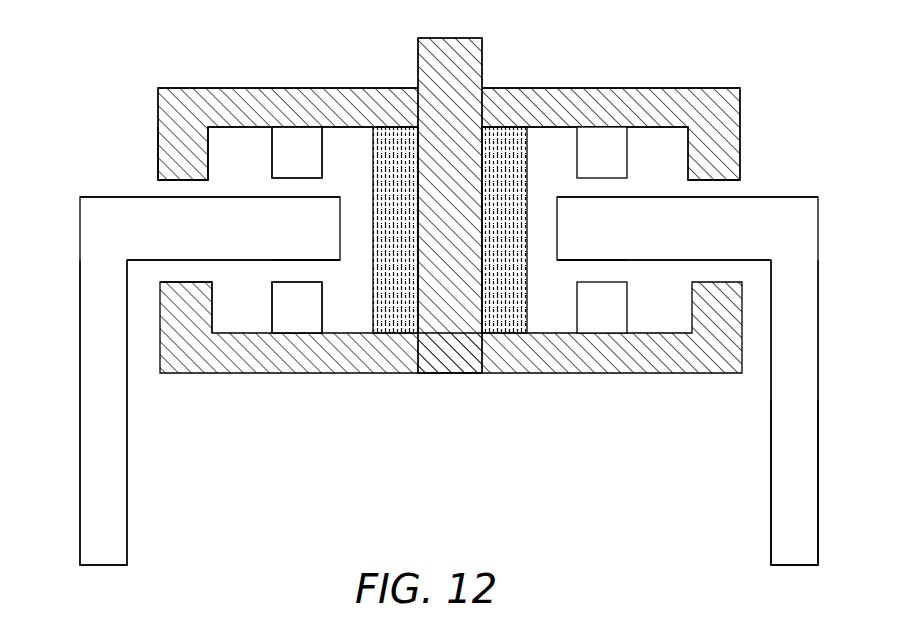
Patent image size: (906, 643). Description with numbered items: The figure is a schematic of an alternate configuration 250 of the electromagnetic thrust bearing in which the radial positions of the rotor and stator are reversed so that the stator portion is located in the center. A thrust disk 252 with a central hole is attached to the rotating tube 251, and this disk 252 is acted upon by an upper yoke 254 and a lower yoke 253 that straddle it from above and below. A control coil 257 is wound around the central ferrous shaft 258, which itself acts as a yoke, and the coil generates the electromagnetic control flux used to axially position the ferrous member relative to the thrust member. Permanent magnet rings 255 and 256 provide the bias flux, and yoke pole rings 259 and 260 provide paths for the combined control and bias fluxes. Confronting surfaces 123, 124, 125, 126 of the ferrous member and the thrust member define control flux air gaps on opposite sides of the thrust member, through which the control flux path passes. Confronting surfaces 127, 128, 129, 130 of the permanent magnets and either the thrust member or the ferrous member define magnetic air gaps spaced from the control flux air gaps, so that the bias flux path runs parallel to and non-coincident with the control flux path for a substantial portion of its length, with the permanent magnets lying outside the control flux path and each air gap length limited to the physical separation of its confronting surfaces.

The configuration 250 is at (136, 48).
The rotating tube 251 is at (771, 510).
The thrust disk 252 is at (628, 264).
The lower yoke 253 is at (298, 375).
The upper yoke 254 is at (280, 88).
The permanent magnet ring 255 is at (272, 163).
The permanent magnet ring 256 is at (272, 307).
The control coil 257 is at (372, 322).
The central ferrous shaft 258 is at (418, 62).
The yoke pole ring 259 is at (158, 150).
The yoke pole ring 260 is at (212, 322).
The confronting surface 123 is at (162, 182).
The confronting surface 124 is at (180, 199).
The confronting surface 125 is at (160, 272).
The confronting surface 126 is at (185, 264).
The confronting surface 127 is at (312, 181).
The confronting surface 128 is at (295, 196).
The confronting surface 129 is at (312, 280).
The confronting surface 130 is at (305, 263).